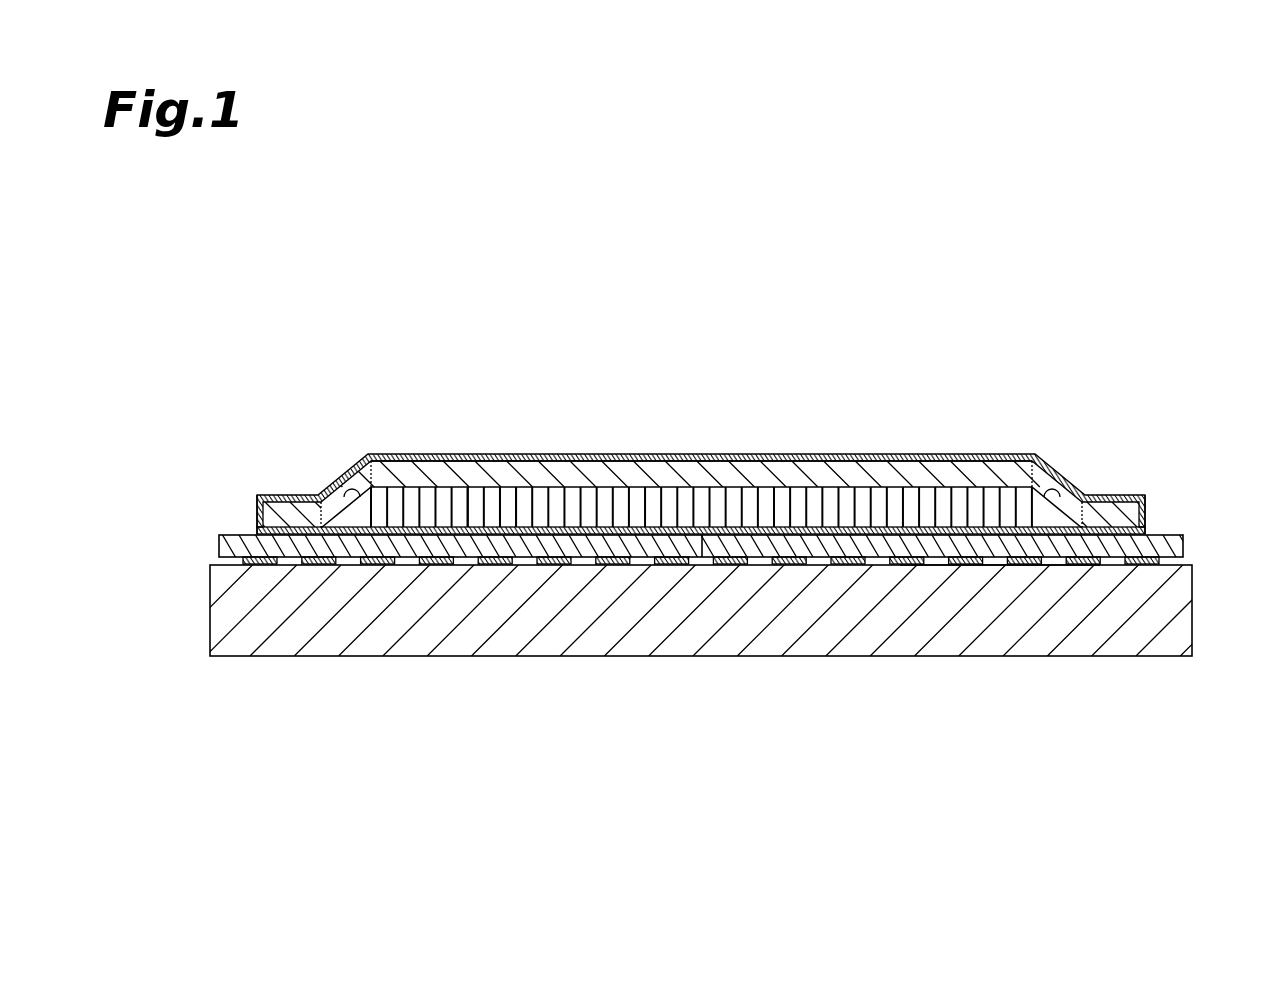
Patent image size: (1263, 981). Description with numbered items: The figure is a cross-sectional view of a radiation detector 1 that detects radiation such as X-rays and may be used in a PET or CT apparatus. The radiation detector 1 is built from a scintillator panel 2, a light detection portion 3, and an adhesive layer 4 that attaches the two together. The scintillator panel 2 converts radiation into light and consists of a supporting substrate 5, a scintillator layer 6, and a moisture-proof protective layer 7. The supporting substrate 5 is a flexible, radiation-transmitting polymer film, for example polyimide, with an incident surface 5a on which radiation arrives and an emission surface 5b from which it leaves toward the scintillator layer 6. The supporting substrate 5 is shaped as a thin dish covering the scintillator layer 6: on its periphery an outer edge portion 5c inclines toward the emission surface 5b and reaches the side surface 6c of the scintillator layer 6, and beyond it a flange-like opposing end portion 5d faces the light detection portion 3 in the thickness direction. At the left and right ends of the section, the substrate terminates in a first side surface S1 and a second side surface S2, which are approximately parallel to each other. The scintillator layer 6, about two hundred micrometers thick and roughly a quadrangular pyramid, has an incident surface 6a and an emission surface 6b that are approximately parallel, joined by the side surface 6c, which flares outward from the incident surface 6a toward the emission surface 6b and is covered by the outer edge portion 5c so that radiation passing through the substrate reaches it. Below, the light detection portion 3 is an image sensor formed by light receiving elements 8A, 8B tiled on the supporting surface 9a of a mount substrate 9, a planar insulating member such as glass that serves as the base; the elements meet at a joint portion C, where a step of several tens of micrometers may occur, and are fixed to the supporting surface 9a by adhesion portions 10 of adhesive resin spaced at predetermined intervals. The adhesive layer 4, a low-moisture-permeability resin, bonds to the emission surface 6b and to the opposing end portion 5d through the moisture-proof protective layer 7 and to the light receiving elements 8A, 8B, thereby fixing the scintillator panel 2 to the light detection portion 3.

The radiation detector 1 is at (304, 286).
The scintillator panel 2 is at (701, 519).
The light detection portion 3 is at (701, 563).
The adhesive layer 4 is at (1183, 540).
The supporting substrate 5 is at (701, 456).
The incident surface 5a is at (551, 460).
The emission surface 5b is at (469, 492).
The outer edge portion 5c is at (347, 481).
The opposing end portion 5d is at (283, 512).
The scintillator layer 6 is at (701, 542).
The incident surface 6a is at (516, 490).
The emission surface 6b is at (795, 538).
The side surface 6c is at (346, 497).
The moisture-proof protective layer 7 is at (951, 458).
The light receiving element 8A is at (603, 562).
The light receiving element 8B is at (936, 628).
The mount substrate 9 is at (757, 620).
The supporting surface 9a is at (992, 555).
The adhesion portion 10 is at (673, 566).
The joint portion C is at (704, 545).
The first side surface S1 is at (258, 512).
The second side surface S2 is at (1145, 512).